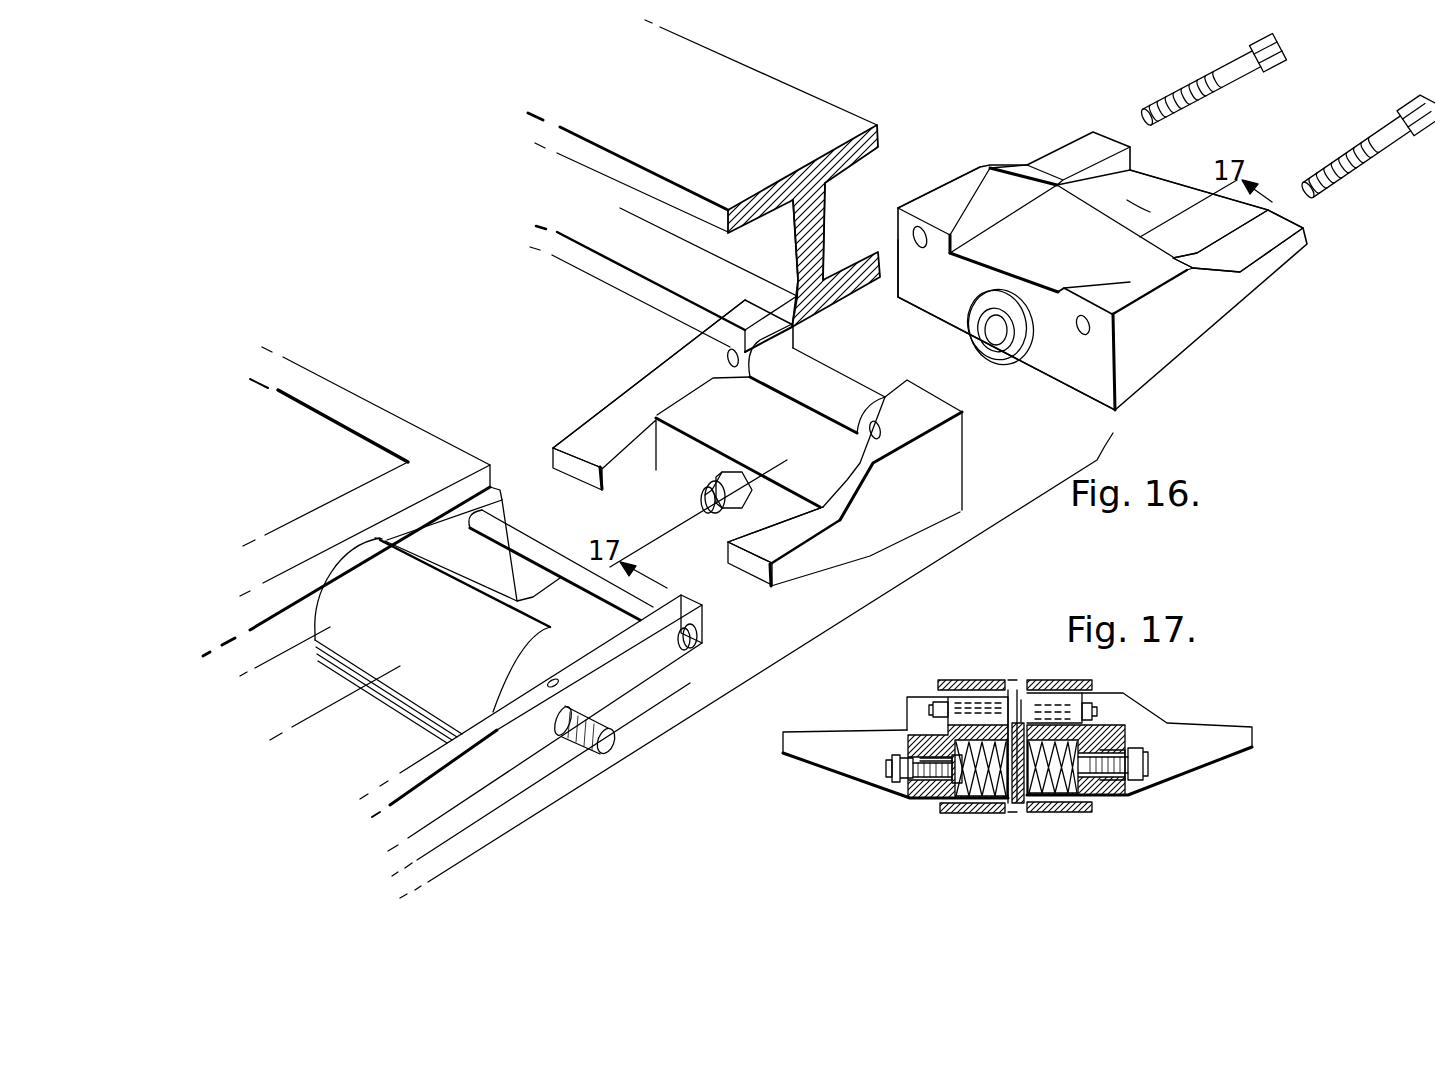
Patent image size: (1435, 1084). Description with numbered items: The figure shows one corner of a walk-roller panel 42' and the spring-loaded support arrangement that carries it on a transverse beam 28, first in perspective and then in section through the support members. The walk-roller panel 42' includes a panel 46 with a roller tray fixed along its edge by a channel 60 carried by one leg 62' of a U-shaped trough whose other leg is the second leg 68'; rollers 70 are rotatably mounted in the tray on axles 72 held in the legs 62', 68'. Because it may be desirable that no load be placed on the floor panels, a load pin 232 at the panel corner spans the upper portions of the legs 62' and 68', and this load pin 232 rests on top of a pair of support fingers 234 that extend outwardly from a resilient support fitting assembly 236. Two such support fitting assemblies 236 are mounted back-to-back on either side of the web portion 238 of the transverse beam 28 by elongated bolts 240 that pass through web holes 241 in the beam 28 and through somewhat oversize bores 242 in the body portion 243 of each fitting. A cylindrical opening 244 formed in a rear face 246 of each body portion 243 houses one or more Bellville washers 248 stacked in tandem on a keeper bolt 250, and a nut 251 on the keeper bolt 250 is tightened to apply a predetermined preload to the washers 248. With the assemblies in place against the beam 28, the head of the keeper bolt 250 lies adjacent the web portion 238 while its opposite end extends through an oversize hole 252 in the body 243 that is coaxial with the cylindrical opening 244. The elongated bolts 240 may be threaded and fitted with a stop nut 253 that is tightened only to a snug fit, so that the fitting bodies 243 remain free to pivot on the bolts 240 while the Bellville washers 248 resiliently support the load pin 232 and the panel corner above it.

In FIG. 16, the transverse beam 28 is at (853, 102).
In FIG. 17, the transverse beam 28 is at (1077, 676).
In FIG. 16, the web portion 238 is at (815, 231).
In FIG. 17, the web portion 238 is at (1028, 680).
In FIG. 16, the resilient support fitting assembly 236 is at (1200, 368).
In FIG. 17, the resilient support fitting assembly 236 is at (1160, 790).
In FIG. 16, the support fingers 234 is at (1110, 177).
In FIG. 17, the support fingers 234 is at (797, 750).
In FIG. 16, the elongated bolts 240 is at (1357, 150).
In FIG. 17, the elongated bolts 240 is at (935, 705).
In FIG. 16, the bores 242 is at (927, 249).
In FIG. 17, the bores 242 is at (977, 692).
In FIG. 16, the body portion 243 is at (1252, 293).
In FIG. 17, the body portion 243 is at (1110, 787).
In FIG. 16, the cylindrical opening 244 is at (979, 328).
In FIG. 17, the cylindrical opening 244 is at (1082, 748).
In FIG. 16, the rear face 246 is at (953, 305).
In FIG. 17, the rear face 246 is at (1010, 812).
In FIG. 16, the Bellville washers 248 is at (1022, 340).
In FIG. 17, the Bellville washers 248 is at (992, 798).
In FIG. 16, the keeper bolt 250 is at (997, 337).
In FIG. 17, the keeper bolt 250 is at (905, 798).
In FIG. 16, the nut 251 is at (1127, 200).
In FIG. 17, the nut 251 is at (893, 755).
In FIG. 17, the oversize hole 252 is at (943, 800).
In FIG. 17, the stop nut 253 is at (923, 720).
In FIG. 17, the web holes 241 is at (1019, 703).
In FIG. 16, the panel 46 is at (282, 442).
In FIG. 16, the walk-roller panel 42' is at (346, 501).
In FIG. 16, the channel 60 is at (367, 408).
In FIG. 16, the second leg 68' is at (473, 527).
In FIG. 16, the leg 62' is at (531, 700).
In FIG. 16, the rollers 70 is at (457, 638).
In FIG. 16, the axles 72 is at (603, 753).
In FIG. 16, the load pins 232 is at (570, 567).